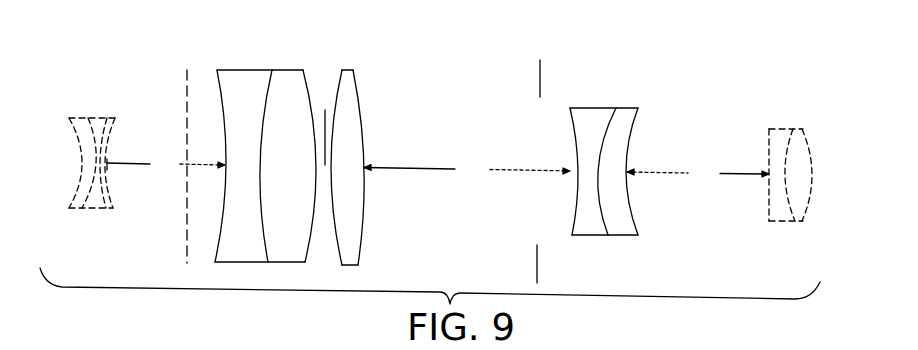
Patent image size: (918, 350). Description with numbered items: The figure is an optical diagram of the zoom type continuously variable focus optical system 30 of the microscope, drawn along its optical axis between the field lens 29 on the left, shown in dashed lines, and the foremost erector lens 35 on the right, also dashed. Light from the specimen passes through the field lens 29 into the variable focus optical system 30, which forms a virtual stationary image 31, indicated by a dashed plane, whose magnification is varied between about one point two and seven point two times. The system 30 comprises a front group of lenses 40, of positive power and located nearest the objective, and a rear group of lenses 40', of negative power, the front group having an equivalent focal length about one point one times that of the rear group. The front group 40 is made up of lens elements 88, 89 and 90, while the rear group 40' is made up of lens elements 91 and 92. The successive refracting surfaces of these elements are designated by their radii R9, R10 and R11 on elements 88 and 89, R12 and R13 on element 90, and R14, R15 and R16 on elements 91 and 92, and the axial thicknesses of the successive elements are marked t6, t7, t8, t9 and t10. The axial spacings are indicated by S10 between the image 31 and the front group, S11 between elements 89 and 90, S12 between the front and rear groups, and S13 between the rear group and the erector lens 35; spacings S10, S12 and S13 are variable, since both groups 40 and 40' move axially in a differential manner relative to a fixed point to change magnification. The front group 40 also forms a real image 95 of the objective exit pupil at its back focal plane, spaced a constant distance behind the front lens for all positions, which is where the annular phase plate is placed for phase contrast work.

The field lens 29 is at (98, 123).
The variable focus optical system 30 is at (207, 56).
The virtual stationary image 31 is at (187, 78).
The foremost erector lens 35 is at (790, 223).
The front group of lenses 40 is at (294, 168).
The rear group of lenses 40' is at (604, 163).
The lens element 88 is at (230, 179).
The lens element 89 is at (280, 182).
The lens element 90 is at (360, 178).
The lens element 91 is at (579, 177).
The lens element 92 is at (626, 178).
The real image of the exit pupil 95 is at (540, 80).
The lens refracting surface radius R9 is at (215, 260).
The lens refracting surface radius R10 is at (268, 260).
The lens refracting surface radius R11 is at (288, 243).
The lens refracting surface radius R12 is at (332, 245).
The lens refracting surface radius R13 is at (357, 248).
The lens refracting surface radius R14 is at (572, 223).
The lens refracting surface radius R15 is at (607, 223).
The lens refracting surface radius R16 is at (633, 218).
The lens spacing S10 is at (166, 166).
The lens spacing S11 is at (324, 129).
The lens spacing S12 is at (467, 171).
The lens spacing S13 is at (698, 174).
The lens thickness t6 is at (239, 166).
The lens thickness t7 is at (285, 166).
The lens thickness t8 is at (345, 167).
The lens thickness t9 is at (587, 172).
The lens thickness t10 is at (613, 172).